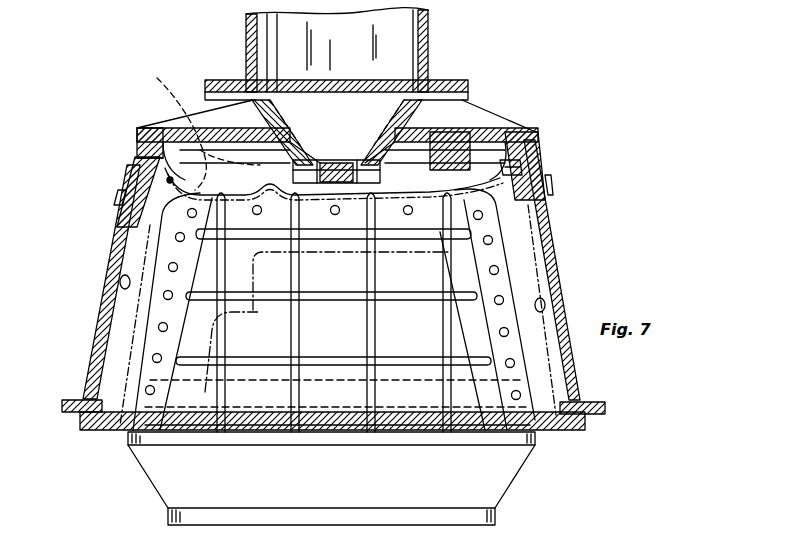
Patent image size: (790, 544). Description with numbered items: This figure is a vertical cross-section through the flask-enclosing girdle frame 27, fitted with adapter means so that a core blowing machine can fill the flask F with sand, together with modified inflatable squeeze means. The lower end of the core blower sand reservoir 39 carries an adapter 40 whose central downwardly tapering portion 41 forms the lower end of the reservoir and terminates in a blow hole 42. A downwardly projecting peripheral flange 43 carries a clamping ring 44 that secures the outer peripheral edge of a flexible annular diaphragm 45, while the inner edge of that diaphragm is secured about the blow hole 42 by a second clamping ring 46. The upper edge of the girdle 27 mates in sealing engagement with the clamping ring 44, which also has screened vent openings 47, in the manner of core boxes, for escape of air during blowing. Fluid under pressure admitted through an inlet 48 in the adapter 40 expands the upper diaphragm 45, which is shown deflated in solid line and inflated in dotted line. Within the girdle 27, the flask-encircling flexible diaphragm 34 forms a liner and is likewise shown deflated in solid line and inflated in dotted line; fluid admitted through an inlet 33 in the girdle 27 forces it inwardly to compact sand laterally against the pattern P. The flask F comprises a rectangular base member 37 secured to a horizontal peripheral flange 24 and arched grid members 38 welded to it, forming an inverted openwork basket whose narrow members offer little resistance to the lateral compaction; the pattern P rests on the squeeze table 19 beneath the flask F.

The core blower sand reservoir 39 is at (430, 43).
The central downwardly tapering portion 41 is at (395, 120).
The blow hole 42 is at (335, 160).
The inlet 48 is at (490, 130).
The screened vent openings 47 is at (166, 180).
The downwardly projecting peripheral flange 43 is at (538, 150).
The clamping ring 44 is at (522, 168).
The adapter 40 is at (455, 140).
The clamping ring 46 is at (385, 185).
The flexible annular diaphragm 45 is at (187, 137).
The inlet 33 is at (118, 217).
The girdle frame 27 is at (110, 298).
The arched grid members 38 is at (157, 342).
The pattern P is at (558, 272).
The flask F is at (502, 354).
The flexible diaphragm 34 is at (160, 246).
The horizontal peripheral flange 24 is at (80, 423).
The squeeze table 19 is at (128, 437).
The rectangular base member 37 is at (203, 417).